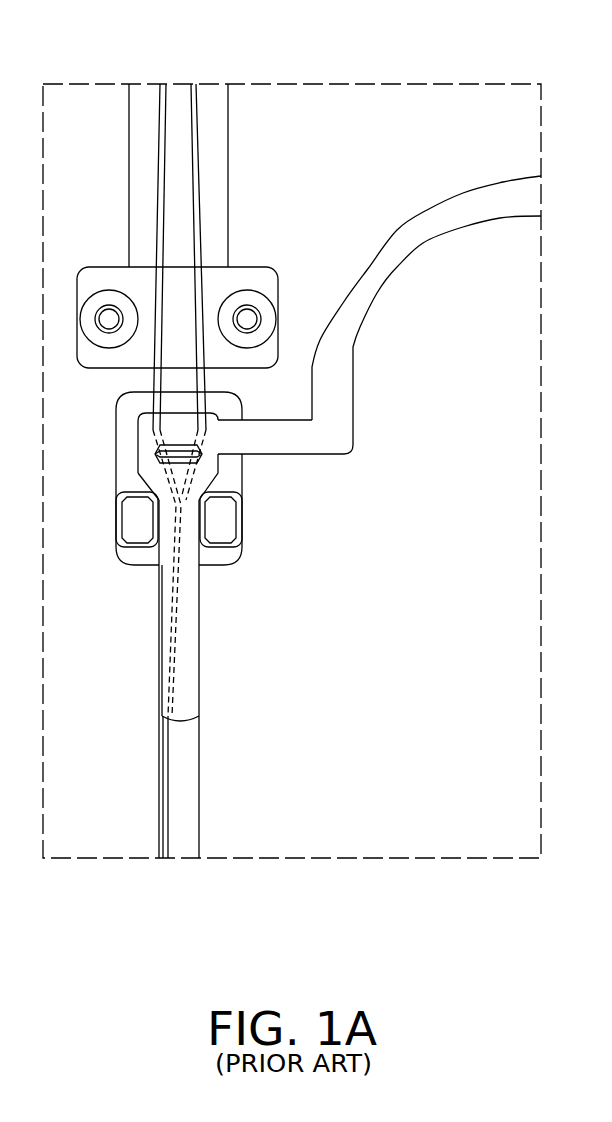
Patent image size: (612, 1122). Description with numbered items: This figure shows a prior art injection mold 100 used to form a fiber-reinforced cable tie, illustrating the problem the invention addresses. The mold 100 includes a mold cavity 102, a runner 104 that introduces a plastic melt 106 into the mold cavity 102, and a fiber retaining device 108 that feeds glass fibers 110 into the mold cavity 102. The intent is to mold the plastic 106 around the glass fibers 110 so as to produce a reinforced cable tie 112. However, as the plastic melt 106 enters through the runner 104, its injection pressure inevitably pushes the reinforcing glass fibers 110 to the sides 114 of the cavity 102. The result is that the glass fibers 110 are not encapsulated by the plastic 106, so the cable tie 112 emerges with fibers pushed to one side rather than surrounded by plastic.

The injection mold 100 is at (362, 107).
The mold cavity 102 is at (188, 800).
The runner 104 is at (432, 241).
The plastic melt 106 is at (352, 452).
The fiber retaining device 108 is at (265, 267).
The glass fibers 110 is at (198, 197).
The reinforced cable tie 112 is at (190, 656).
The sides of the cavity 114 is at (157, 695).